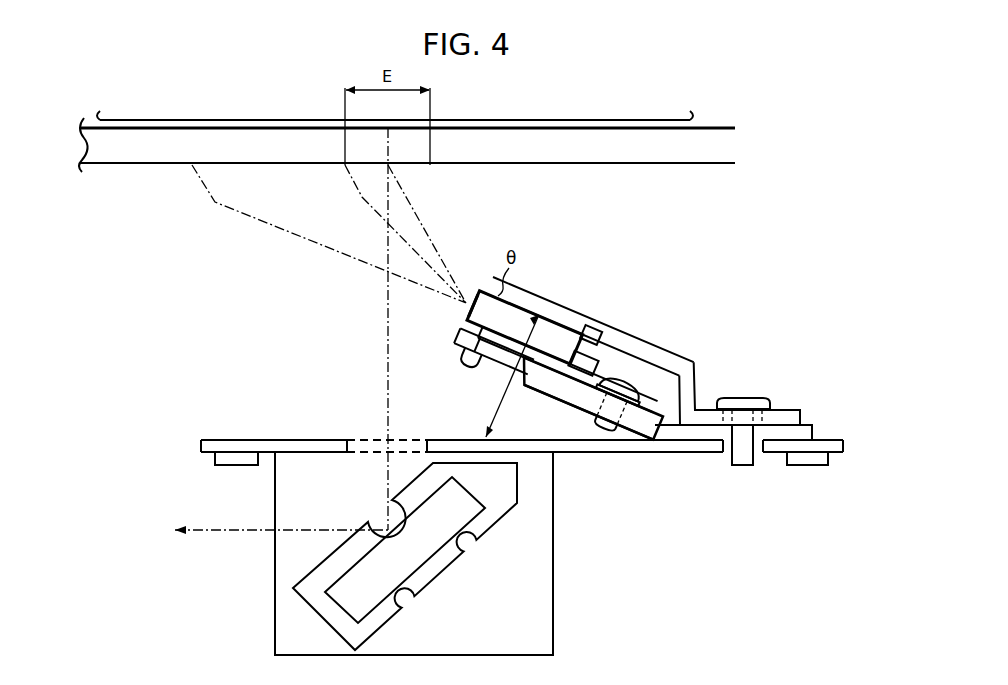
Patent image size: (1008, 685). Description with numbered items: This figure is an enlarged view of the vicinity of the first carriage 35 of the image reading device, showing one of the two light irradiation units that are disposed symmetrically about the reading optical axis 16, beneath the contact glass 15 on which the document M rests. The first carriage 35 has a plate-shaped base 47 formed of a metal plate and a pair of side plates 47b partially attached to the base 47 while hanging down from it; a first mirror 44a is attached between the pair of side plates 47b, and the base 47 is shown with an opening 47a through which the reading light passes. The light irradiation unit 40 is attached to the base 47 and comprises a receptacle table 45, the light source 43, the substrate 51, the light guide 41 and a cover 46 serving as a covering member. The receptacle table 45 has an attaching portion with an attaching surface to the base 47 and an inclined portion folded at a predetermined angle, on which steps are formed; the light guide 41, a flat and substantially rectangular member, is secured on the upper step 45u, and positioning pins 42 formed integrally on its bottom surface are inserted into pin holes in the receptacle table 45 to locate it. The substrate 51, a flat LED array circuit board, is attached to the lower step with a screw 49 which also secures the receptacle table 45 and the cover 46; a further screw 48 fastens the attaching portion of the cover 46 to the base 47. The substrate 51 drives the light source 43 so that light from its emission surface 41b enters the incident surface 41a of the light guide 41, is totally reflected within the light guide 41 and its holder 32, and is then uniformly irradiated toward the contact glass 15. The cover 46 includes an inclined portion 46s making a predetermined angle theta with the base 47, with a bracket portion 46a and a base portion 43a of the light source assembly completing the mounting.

The contact glass 15 is at (588, 119).
The document M is at (645, 119).
The reading optical axis 16 is at (384, 342).
The holder 32 is at (580, 333).
The first carriage 35 is at (641, 459).
The light irradiation unit 40 is at (668, 262).
The light guide 41 is at (512, 322).
The incident surface 41a is at (583, 335).
The emission surface 41b is at (467, 296).
The positioning pin 42 is at (472, 360).
The light source 43 is at (600, 356).
The adjustment plate base portion 43a is at (588, 397).
The first mirror 44a is at (437, 553).
The receptacle table 45 is at (815, 431).
The upper step 45u is at (499, 360).
The cover 46 is at (802, 412).
The bracket portion 46a is at (551, 343).
The inclined portion 46s is at (565, 313).
The base 47 is at (829, 462).
The base opening 47a is at (351, 448).
The side plate 47b is at (553, 612).
The screw 48 is at (744, 399).
The screw 49 is at (638, 384).
The substrate 51 is at (688, 395).